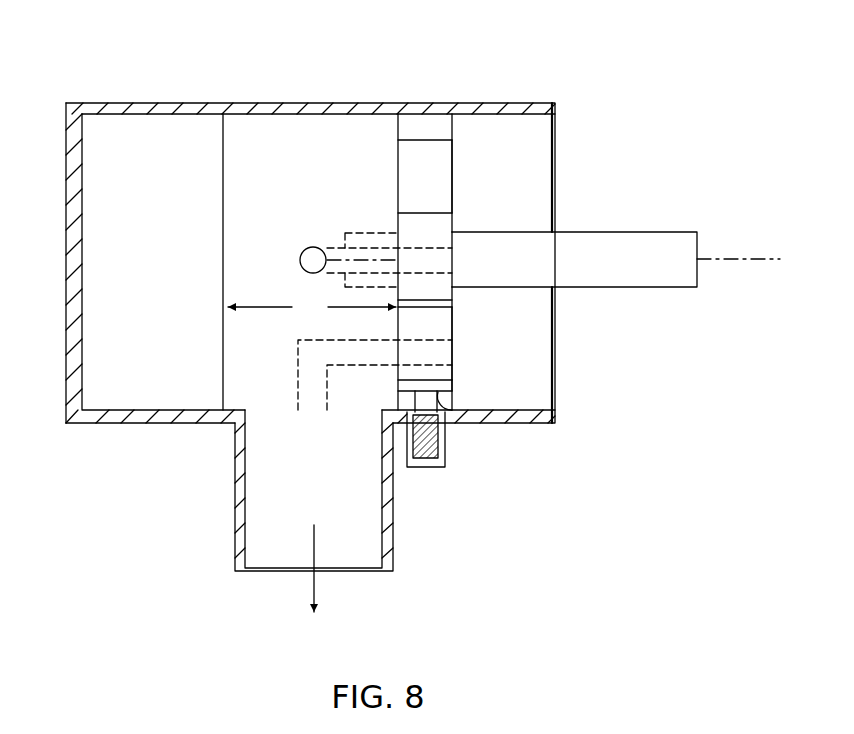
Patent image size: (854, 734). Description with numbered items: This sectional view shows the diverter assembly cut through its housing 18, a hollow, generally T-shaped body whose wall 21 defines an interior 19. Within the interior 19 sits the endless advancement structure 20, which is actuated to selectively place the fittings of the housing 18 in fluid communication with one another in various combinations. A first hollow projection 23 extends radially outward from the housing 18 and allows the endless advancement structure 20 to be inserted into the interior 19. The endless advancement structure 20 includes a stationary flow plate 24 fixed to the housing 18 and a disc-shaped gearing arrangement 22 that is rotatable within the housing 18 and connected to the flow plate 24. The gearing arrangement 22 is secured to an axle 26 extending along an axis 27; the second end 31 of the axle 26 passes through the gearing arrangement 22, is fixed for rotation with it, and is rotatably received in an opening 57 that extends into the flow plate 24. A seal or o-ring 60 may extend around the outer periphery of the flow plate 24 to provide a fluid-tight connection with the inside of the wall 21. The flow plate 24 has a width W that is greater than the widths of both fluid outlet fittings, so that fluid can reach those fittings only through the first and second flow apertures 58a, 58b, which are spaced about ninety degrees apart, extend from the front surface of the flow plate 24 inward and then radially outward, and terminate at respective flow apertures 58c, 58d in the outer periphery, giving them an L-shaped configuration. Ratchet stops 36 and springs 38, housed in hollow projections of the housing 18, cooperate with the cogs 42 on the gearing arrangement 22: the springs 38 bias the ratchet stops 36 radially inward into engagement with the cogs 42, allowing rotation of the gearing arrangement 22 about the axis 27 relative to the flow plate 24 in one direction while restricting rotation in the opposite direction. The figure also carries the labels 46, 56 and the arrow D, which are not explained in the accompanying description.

The housing 18 is at (152, 103).
The interior 19 is at (108, 208).
The endless advancement structure 20 is at (319, 140).
The wall 21 is at (487, 103).
The gearing arrangement 22 is at (424, 137).
The first hollow projection 23 is at (540, 103).
The flow plate 24 is at (223, 155).
The axle 26 is at (655, 250).
The axis 27 is at (760, 262).
The second end 31 is at (389, 230).
The opening 57 is at (359, 230).
The ratchet stops 36 is at (415, 402).
The springs 38 is at (428, 462).
The cogs 42 is at (452, 160).
The passage 46 is at (455, 415).
The openings 56 is at (452, 260).
The first flow aperture 58a is at (400, 260).
The second flow aperture 58b is at (402, 350).
The flow aperture 58c is at (313, 244).
The flow aperture 58d is at (315, 416).
The seal 60 is at (248, 130).
The width W is at (312, 307).
The flow direction D is at (313, 586).